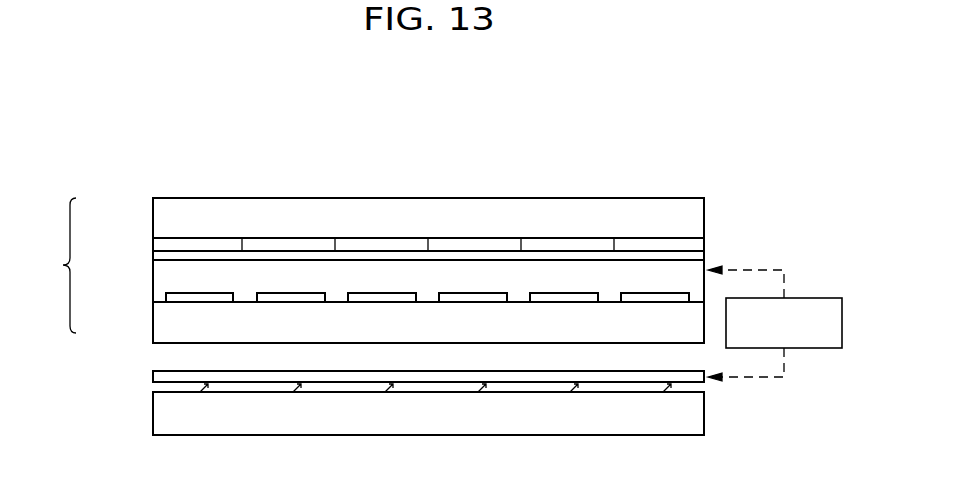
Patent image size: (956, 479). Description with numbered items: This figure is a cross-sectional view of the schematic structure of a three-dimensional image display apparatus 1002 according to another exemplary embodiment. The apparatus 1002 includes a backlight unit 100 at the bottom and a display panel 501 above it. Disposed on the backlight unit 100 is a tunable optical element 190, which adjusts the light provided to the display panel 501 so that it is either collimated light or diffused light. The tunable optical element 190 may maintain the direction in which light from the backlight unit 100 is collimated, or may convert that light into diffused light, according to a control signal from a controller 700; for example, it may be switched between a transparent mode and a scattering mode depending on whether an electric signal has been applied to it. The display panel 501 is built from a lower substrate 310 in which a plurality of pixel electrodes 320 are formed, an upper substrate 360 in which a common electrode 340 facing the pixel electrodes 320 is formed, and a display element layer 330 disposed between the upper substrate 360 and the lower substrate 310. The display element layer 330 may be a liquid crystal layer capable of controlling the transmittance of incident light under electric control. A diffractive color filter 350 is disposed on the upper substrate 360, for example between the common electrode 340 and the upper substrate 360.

The 3D image display apparatus 1002 is at (706, 162).
The display panel 501 is at (53, 265).
The upper substrate 360 is at (153, 220).
The diffractive color filter 350 is at (153, 245).
The common electrode 340 is at (153, 255).
The display element layer 330 is at (153, 277).
The pixel electrodes 320 is at (166, 298).
The lower substrate 310 is at (153, 322).
The tunable optical element 190 is at (153, 377).
The backlight unit 100 is at (153, 410).
The controller 700 is at (805, 298).